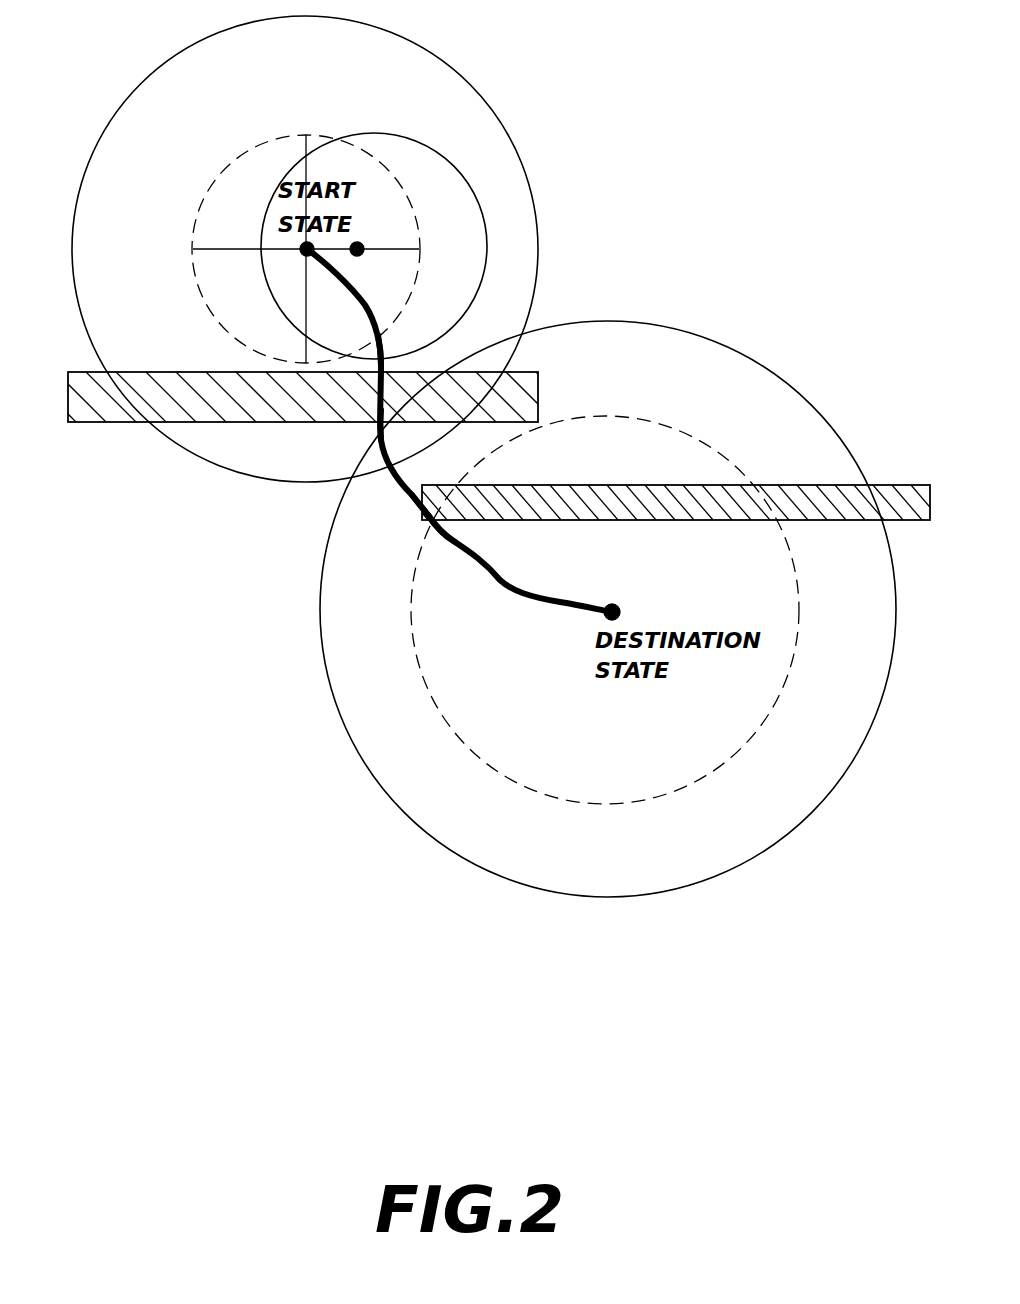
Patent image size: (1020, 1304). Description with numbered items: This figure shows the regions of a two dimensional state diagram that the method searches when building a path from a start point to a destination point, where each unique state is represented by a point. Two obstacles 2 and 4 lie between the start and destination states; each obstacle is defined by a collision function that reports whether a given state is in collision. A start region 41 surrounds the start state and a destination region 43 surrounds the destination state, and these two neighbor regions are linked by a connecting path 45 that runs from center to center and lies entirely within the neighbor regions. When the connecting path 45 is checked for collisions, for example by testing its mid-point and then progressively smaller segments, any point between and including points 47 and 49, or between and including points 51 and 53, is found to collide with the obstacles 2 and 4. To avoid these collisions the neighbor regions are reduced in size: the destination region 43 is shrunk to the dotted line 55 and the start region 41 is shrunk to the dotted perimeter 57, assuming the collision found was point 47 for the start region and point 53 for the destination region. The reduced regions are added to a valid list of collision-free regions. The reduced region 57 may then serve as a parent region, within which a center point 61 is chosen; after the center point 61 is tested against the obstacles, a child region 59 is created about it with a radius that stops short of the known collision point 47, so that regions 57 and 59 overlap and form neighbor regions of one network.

The obstacle 2 is at (70, 422).
The obstacle 4 is at (890, 485).
The start region 41 is at (538, 233).
The destination region 43 is at (807, 400).
The connecting path 45 is at (460, 431).
The collision point 47 is at (385, 358).
The collision point 49 is at (373, 425).
The collision point 51 is at (418, 505).
The collision point 53 is at (430, 527).
The dotted line (reduced destination region perimeter) 55 is at (636, 610).
The dotted perimeter (reduced start region) 57 is at (321, 135).
The child region 59 is at (435, 150).
The center point 61 is at (357, 249).